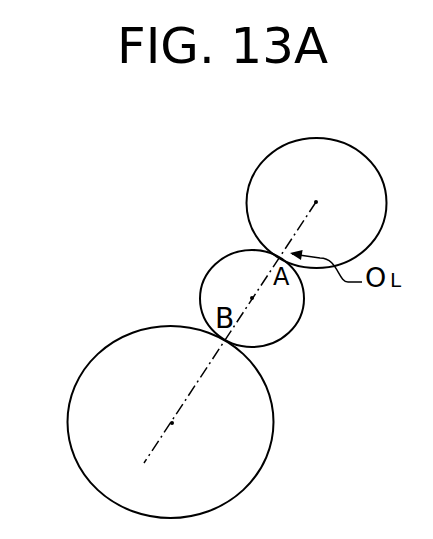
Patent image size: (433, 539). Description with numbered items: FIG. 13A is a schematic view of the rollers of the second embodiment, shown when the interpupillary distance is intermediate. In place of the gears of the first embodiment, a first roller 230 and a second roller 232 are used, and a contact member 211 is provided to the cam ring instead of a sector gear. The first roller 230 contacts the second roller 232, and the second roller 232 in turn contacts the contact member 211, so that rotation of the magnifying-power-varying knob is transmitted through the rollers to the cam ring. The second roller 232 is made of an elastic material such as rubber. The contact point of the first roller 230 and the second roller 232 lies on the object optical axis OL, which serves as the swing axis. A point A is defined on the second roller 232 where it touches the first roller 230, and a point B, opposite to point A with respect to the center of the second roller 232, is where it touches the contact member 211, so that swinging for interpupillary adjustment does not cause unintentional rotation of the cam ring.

The first roller 230 is at (257, 170).
The second roller 232 is at (213, 263).
The contact member 211 is at (100, 348).